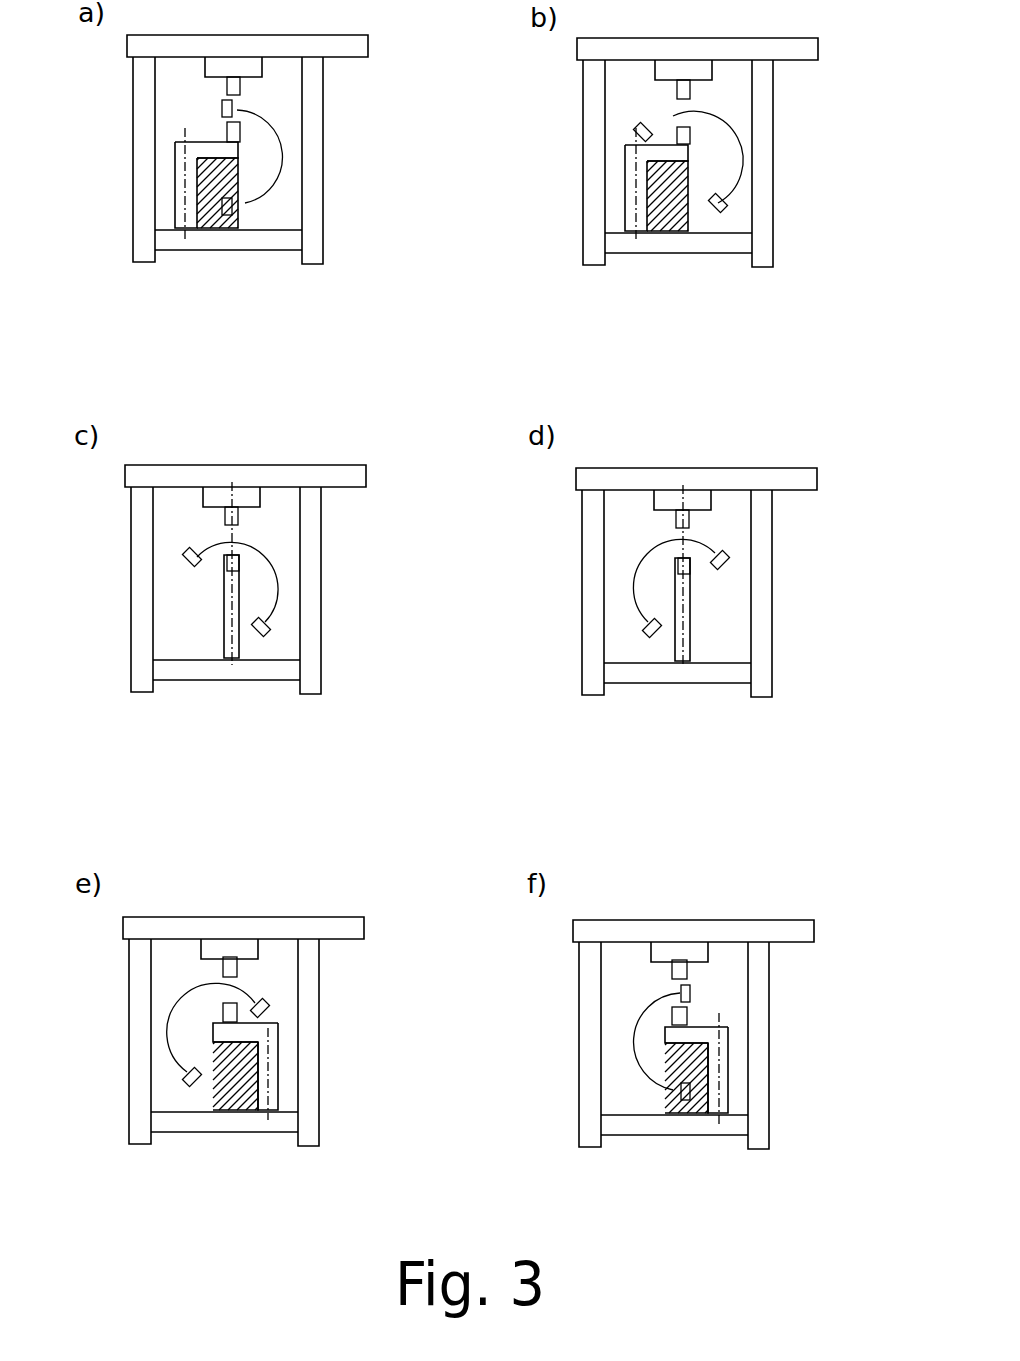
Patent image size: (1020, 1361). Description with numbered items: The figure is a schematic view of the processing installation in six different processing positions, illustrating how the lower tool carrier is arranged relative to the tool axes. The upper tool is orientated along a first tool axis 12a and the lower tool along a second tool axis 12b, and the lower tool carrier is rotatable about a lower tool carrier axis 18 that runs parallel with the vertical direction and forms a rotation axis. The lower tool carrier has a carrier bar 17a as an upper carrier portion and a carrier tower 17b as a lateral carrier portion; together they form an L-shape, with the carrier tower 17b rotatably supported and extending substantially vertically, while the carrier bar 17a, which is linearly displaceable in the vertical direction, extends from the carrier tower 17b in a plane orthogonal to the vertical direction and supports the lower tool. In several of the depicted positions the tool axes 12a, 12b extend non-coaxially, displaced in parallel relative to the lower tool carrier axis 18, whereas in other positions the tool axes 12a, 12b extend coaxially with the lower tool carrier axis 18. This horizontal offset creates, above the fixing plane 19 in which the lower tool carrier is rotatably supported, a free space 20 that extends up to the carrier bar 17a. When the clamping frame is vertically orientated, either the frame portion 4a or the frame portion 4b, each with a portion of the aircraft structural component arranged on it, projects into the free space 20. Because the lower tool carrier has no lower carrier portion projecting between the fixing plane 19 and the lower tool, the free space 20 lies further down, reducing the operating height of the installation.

The frame portion 4a is at (222, 107).
The frame portion 4b is at (232, 200).
The first tool axis 12a is at (114, 78).
The second tool axis 12b is at (114, 132).
The carrier bar 17a is at (220, 142).
The carrier tower 17b is at (369, 230).
The lower tool carrier axis 18 is at (369, 192).
The fixing plane 19 is at (114, 215).
The free space 20 is at (251, 215).